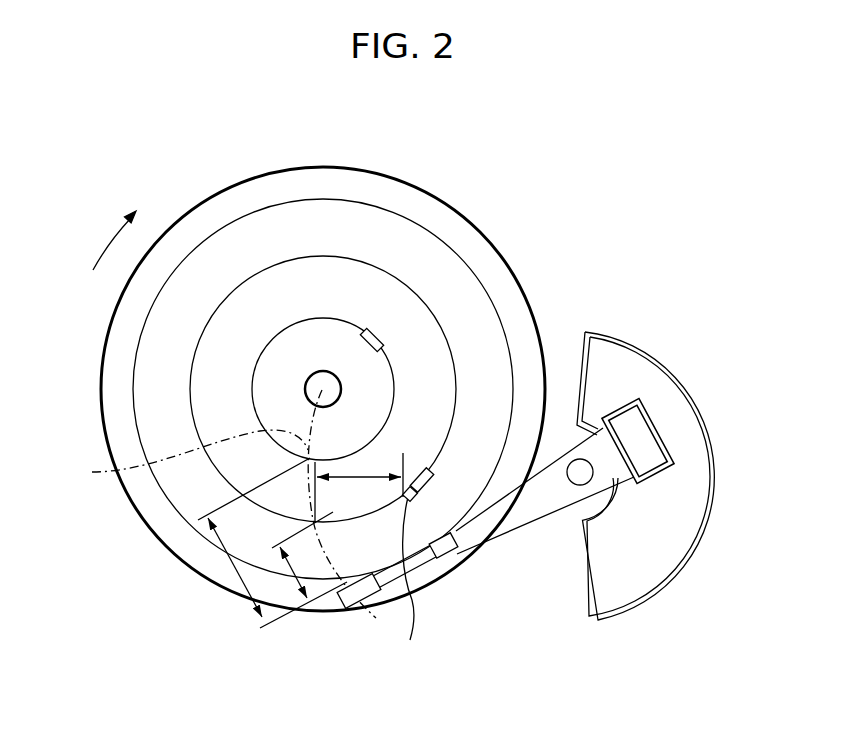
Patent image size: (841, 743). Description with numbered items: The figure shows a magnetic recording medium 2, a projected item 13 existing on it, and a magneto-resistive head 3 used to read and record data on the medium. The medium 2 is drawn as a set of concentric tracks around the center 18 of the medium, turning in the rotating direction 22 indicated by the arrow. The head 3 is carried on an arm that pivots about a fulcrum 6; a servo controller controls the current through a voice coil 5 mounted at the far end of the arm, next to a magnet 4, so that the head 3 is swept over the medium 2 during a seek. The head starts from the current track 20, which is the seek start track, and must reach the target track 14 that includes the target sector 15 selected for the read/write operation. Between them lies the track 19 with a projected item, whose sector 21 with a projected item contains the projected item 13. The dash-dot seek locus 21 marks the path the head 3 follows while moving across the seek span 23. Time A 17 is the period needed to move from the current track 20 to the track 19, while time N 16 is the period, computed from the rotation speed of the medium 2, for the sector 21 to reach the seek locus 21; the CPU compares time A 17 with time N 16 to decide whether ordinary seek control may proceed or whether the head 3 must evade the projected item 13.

The magnetic recording medium 2 is at (164, 548).
The magneto-resistive head 3 is at (342, 602).
The magnet 4 is at (641, 603).
The voice coil 5 is at (646, 412).
The fulcrum 6 is at (571, 481).
The projected item 13 is at (430, 497).
The target track 14 is at (321, 318).
The target sector 15 is at (381, 332).
The time N 16 is at (364, 478).
The time A 17 is at (283, 600).
The center of magnetic recording medium 18 is at (306, 386).
The track with a projected item 19 is at (397, 276).
The current track 20 is at (514, 357).
The sector with a projected item 21 is at (287, 554).
The rotating direction 22 is at (104, 246).
The seek span 23 is at (228, 583).